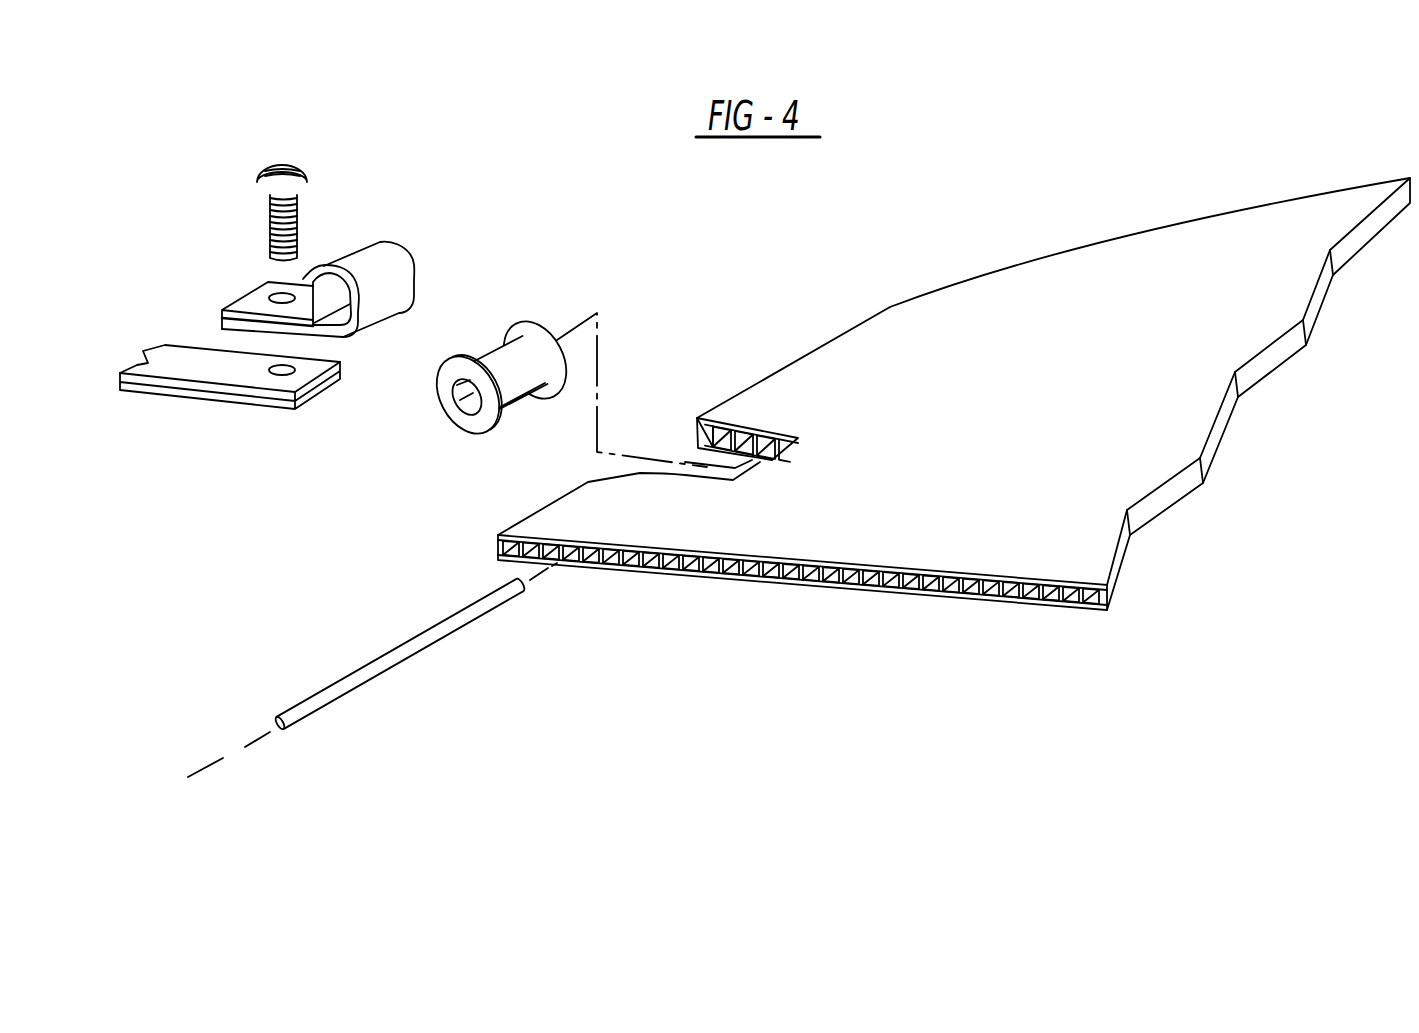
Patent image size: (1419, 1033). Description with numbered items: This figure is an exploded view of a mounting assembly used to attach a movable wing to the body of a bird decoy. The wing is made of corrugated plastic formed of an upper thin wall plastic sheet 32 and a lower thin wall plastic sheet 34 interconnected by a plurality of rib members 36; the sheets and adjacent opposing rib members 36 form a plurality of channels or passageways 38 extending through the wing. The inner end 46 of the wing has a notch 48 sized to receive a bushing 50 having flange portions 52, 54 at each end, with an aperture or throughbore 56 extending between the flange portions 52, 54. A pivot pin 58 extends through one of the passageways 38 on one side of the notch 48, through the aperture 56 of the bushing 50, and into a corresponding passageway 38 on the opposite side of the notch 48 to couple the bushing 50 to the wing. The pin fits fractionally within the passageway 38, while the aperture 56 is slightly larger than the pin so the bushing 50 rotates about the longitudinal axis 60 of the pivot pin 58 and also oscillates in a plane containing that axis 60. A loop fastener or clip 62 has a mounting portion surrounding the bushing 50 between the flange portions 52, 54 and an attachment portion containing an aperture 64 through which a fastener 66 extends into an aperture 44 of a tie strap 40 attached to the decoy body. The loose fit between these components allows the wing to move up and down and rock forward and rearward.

The upper thin wall plastic sheet 32 is at (802, 578).
The lower thin wall plastic sheet 34 is at (805, 584).
The rib members 36 is at (910, 570).
The channels or passageways 38 is at (572, 560).
The tie strap 40 is at (188, 382).
The apertures 44 is at (273, 372).
The inner end of the wing 46 is at (773, 374).
The notch 48 is at (740, 468).
The bushing 50 is at (511, 374).
The flange portion 52 is at (445, 380).
The flange portion 54 is at (553, 333).
The aperture or throughbore 56 is at (467, 400).
The pivot pin 58 is at (410, 650).
The longitudinal axis of the pivot pin 60 is at (235, 748).
The loop fastener or clip 62 is at (395, 273).
The aperture 64 is at (287, 293).
The fastener 66 is at (300, 172).